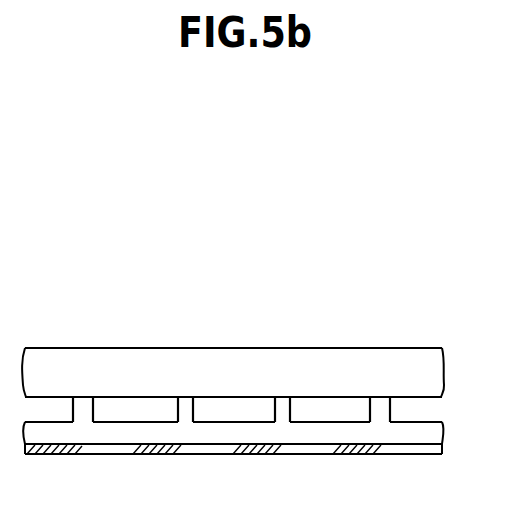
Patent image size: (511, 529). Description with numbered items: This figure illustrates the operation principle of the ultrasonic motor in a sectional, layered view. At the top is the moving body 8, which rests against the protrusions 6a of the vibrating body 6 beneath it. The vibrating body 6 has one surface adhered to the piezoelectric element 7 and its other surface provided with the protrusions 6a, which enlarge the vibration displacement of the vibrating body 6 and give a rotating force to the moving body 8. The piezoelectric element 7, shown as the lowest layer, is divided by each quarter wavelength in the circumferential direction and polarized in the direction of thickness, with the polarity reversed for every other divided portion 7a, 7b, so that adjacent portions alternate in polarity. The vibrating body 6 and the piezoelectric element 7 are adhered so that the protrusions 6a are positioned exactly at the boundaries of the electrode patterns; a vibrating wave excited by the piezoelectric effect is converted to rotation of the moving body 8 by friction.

The moving body 8 is at (423, 377).
The vibrating body 6 is at (430, 438).
The protrusions 6a is at (85, 408).
The piezoelectric element 7 is at (437, 450).
The divided portion 7a is at (48, 456).
The divided portion 7b is at (108, 456).